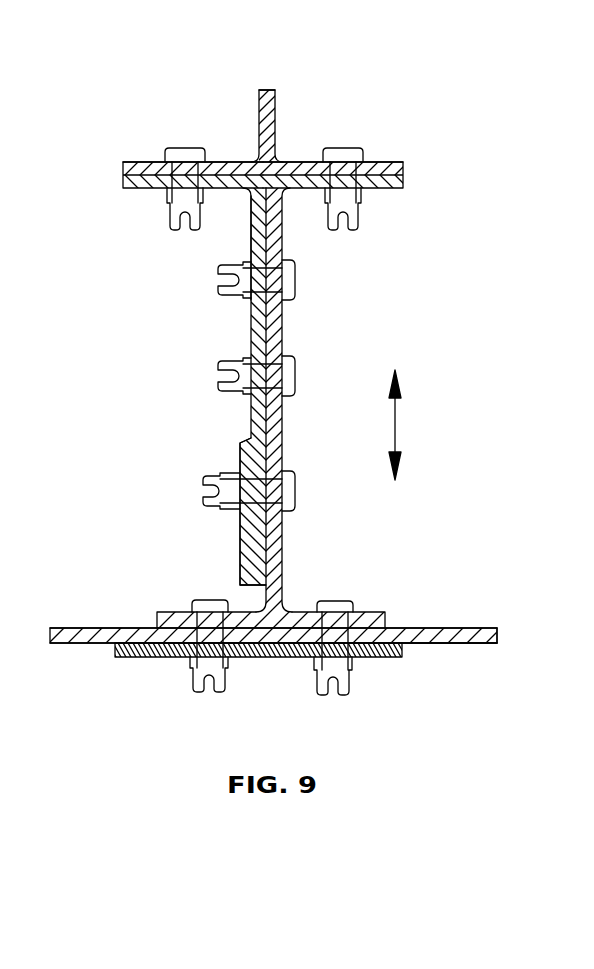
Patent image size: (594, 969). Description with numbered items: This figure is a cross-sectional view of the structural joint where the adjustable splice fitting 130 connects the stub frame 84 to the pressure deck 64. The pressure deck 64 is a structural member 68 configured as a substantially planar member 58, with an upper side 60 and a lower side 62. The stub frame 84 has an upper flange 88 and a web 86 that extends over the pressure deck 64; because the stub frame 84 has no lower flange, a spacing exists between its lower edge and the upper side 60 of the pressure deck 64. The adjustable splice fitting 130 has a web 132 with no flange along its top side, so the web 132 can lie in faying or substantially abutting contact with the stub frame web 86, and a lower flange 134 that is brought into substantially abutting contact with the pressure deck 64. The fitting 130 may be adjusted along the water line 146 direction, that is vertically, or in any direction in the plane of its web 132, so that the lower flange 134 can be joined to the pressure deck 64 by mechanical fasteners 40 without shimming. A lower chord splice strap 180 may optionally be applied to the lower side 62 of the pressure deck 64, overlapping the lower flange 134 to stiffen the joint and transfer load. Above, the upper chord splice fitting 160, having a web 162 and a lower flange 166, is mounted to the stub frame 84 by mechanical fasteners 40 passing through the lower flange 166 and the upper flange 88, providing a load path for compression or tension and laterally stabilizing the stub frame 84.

The mechanical fastener 40 is at (183, 148).
The planar member 58 is at (497, 628).
The upper side of the pressure deck 60 is at (453, 627).
The lower side of the pressure deck 62 is at (457, 644).
The pressure deck 64 is at (497, 636).
The structural member 68 is at (497, 643).
The stub frame 84 is at (133, 188).
The web 86 is at (250, 229).
The upper flange 88 is at (404, 186).
The adjustable splice fitting 130 is at (282, 335).
The web 132 is at (283, 421).
The lower flange 134 is at (380, 612).
The water line direction 146 is at (396, 420).
The upper chord splice fitting 160 is at (260, 128).
The web 162 is at (265, 90).
The lower flange 166 is at (404, 166).
The lower chord splice strap 180 is at (264, 657).